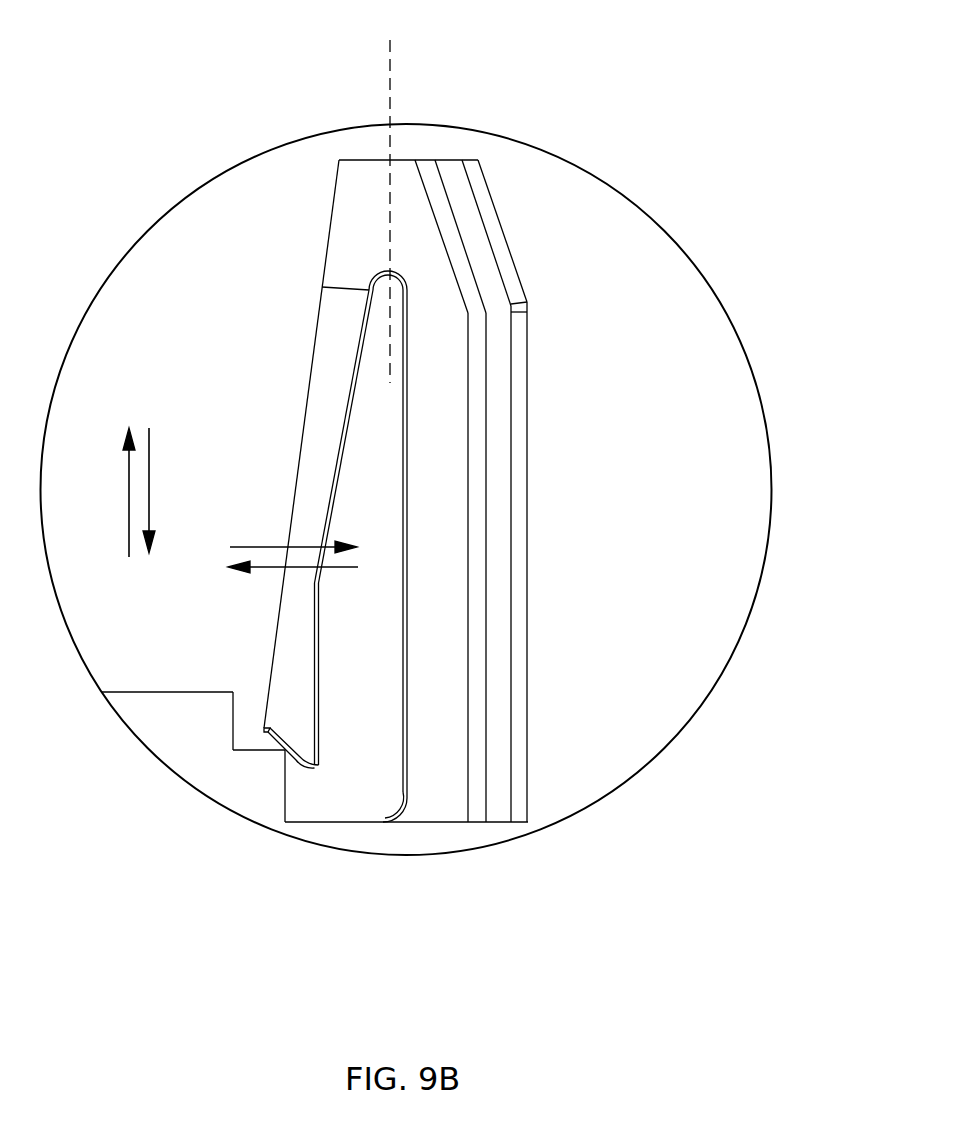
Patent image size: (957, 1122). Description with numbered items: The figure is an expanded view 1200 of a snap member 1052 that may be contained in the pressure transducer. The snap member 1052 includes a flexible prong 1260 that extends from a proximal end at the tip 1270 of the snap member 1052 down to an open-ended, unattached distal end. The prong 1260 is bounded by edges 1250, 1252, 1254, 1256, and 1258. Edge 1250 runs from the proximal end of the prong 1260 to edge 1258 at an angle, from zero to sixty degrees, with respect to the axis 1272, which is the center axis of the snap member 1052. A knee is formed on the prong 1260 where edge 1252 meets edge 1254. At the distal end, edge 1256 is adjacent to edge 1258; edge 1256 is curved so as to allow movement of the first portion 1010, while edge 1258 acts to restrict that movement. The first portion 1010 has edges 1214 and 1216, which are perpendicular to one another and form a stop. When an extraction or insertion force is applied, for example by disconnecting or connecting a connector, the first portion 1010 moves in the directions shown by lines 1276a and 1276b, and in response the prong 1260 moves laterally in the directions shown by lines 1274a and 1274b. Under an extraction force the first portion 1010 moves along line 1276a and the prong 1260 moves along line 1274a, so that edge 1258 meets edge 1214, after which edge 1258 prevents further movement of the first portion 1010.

The expanded view 1200 is at (742, 57).
The tip 1270 is at (353, 160).
The axis 1272 is at (390, 76).
The snap member 1052 is at (448, 342).
The prong 1260 is at (327, 372).
The edge 1250 is at (298, 430).
The edge 1252 is at (340, 463).
The edge 1254 is at (318, 667).
The edge 1256 is at (303, 767).
The edge 1258 is at (263, 730).
The first portion 1010 is at (138, 708).
The edge 1214 is at (267, 752).
The edge 1216 is at (283, 798).
The line 1274a is at (247, 547).
The line 1274b is at (262, 570).
The line 1276a is at (127, 493).
The line 1276b is at (200, 468).